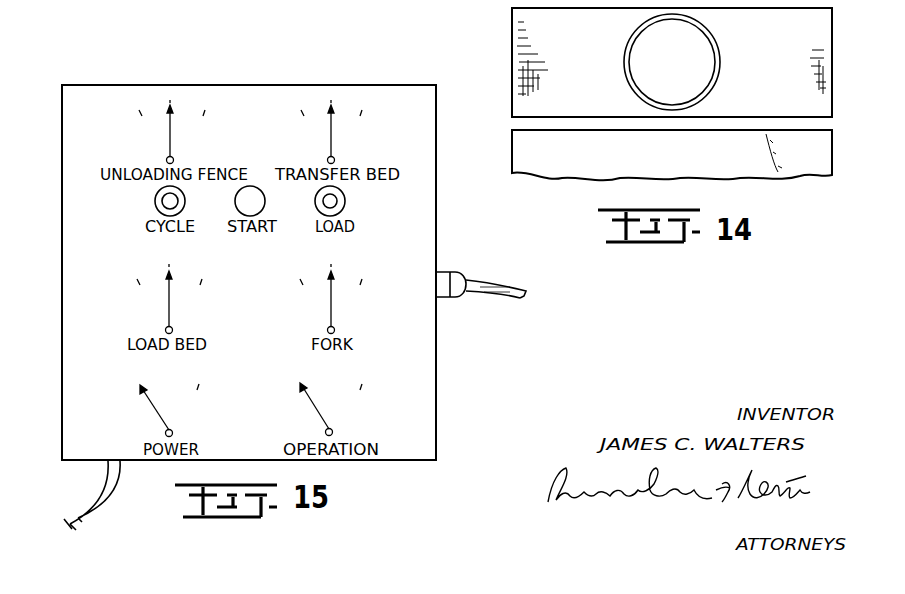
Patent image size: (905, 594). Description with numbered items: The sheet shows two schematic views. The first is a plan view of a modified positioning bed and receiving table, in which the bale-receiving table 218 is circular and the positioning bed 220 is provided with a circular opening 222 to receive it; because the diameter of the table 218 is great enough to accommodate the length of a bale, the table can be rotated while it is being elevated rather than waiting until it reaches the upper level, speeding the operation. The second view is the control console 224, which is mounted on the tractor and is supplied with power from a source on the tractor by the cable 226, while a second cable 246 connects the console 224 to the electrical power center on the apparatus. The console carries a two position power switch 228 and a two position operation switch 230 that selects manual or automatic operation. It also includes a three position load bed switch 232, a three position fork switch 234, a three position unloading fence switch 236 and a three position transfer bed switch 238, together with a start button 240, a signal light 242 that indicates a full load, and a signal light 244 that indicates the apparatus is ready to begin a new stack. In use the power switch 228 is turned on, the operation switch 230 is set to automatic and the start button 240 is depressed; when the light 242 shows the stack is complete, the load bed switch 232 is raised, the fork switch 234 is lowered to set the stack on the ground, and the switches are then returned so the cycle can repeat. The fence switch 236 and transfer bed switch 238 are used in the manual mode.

In FIG. 14, the bale-receiving table 218 is at (706, 50).
In FIG. 14, the positioning bed 220 is at (786, 82).
In FIG. 14, the circular opening 222 is at (634, 52).
In FIG. 15, the control console 224 is at (416, 461).
In FIG. 15, the cable 226 is at (100, 494).
In FIG. 15, the power switch 228 is at (155, 418).
In FIG. 15, the operation switch 230 is at (312, 402).
In FIG. 15, the load bed switch 232 is at (170, 302).
In FIG. 15, the fork switch 234 is at (332, 302).
In FIG. 15, the fence switch 236 is at (171, 140).
In FIG. 15, the transfer bed switch 238 is at (332, 140).
In FIG. 15, the start switch or button 240 is at (265, 197).
In FIG. 15, the signal light 242 is at (345, 197).
In FIG. 15, the signal light 244 is at (185, 197).
In FIG. 15, the cable 246 is at (488, 282).